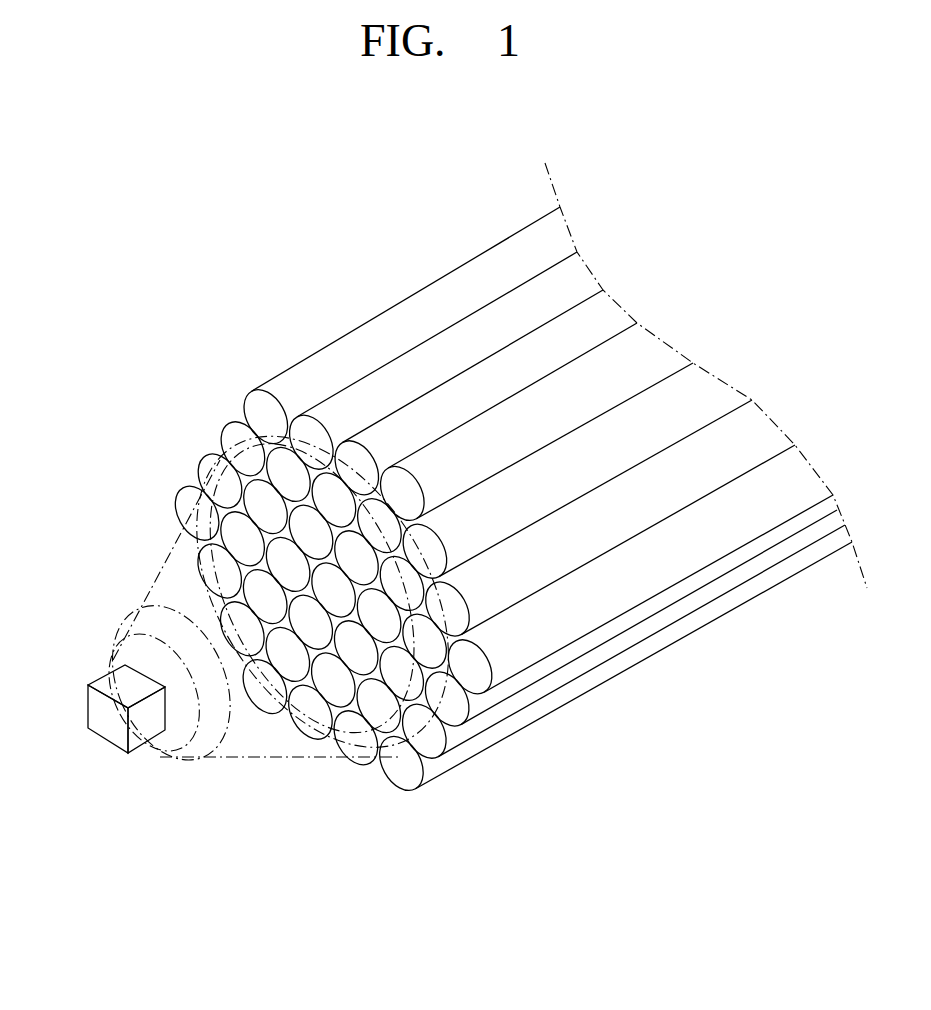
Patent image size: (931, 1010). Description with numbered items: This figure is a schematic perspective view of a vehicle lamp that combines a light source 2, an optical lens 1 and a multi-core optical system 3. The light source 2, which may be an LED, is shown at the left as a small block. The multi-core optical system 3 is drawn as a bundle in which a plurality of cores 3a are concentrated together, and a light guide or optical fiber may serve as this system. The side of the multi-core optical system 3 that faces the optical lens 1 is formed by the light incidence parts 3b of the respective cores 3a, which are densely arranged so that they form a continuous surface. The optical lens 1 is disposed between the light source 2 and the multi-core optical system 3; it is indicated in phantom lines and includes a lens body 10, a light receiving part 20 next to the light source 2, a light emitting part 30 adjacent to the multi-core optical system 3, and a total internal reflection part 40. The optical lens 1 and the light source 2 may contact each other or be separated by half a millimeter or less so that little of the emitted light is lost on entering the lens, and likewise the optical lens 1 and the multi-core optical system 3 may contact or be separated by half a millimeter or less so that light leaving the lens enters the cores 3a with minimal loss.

The optical lens 1 is at (281, 764).
The light source 2 is at (110, 727).
The multi-core optical system 3 is at (593, 703).
The core 3a is at (683, 478).
The light incidence part 3b is at (457, 612).
The lens body 10 is at (156, 567).
The total internal reflection part 40 is at (156, 567).
The light receiving part 20 is at (185, 725).
The light emitting part 30 is at (393, 728).